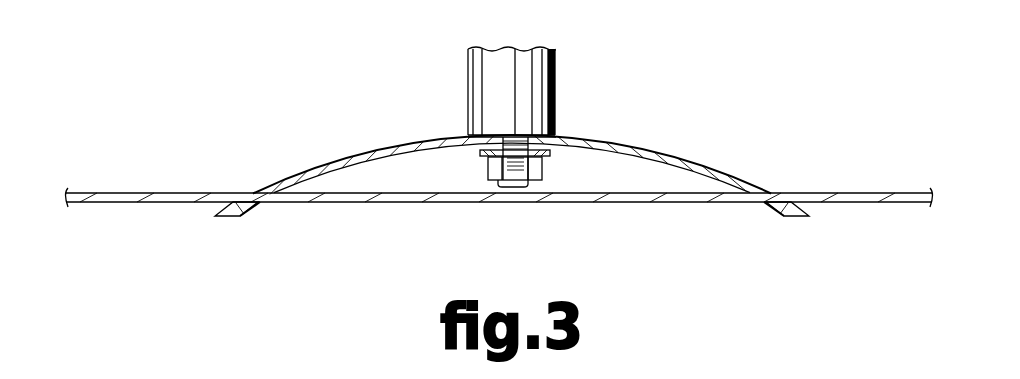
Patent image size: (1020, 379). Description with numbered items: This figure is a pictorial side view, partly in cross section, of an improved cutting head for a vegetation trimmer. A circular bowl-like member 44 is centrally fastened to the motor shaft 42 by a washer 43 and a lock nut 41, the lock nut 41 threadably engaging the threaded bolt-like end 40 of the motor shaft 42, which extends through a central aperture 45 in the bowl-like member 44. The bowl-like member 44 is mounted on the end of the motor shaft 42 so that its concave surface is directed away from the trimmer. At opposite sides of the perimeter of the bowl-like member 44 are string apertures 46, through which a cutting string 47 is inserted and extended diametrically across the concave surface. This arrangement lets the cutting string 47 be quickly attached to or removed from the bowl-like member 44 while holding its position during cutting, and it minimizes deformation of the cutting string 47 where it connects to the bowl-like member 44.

The threaded bolt-like end 40 is at (510, 186).
The lock nut 41 is at (544, 177).
The motor shaft 42 is at (555, 64).
The washer 43 is at (480, 152).
The circular bowl-like member 44 is at (644, 148).
The central aperture 45 is at (557, 136).
The string apertures 46 is at (266, 208).
The cutting string 47 is at (627, 203).